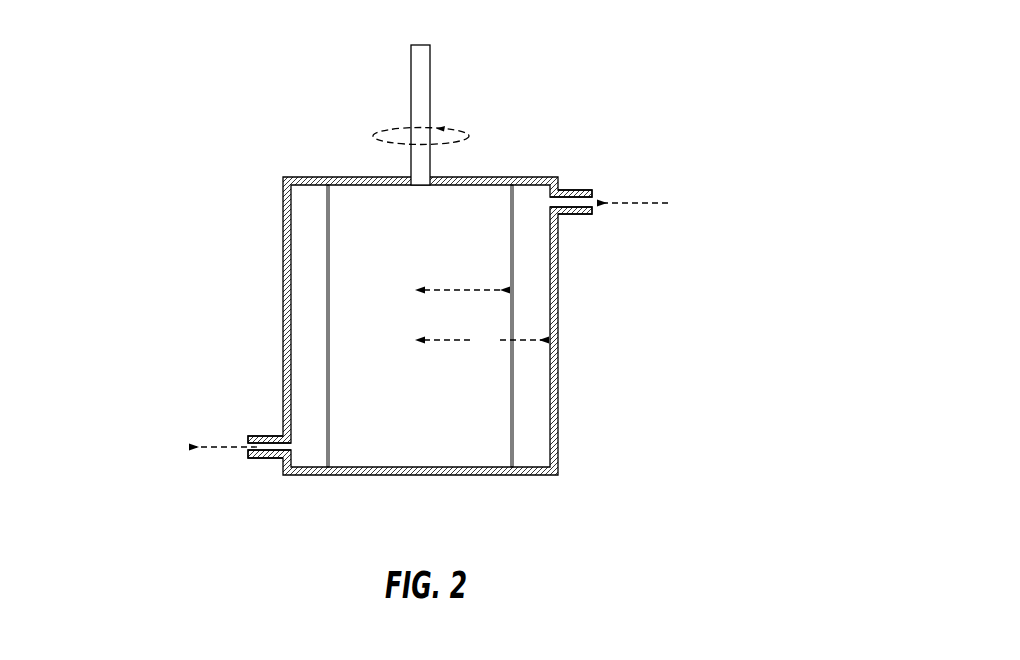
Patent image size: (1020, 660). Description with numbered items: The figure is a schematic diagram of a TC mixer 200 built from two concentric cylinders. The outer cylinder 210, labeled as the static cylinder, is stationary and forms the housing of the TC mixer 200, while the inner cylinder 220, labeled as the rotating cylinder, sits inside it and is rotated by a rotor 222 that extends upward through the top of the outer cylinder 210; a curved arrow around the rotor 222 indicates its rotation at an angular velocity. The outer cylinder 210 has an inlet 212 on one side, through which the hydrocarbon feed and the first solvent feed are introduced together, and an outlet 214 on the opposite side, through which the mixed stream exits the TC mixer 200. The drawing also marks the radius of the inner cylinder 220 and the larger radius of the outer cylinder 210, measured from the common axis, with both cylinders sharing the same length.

The TC mixer 200 is at (208, 112).
The outer cylinder 210 is at (558, 358).
The inlet 212 is at (647, 203).
The outlet 214 is at (227, 447).
The inner cylinder 220 is at (472, 458).
The rotor 222 is at (431, 83).